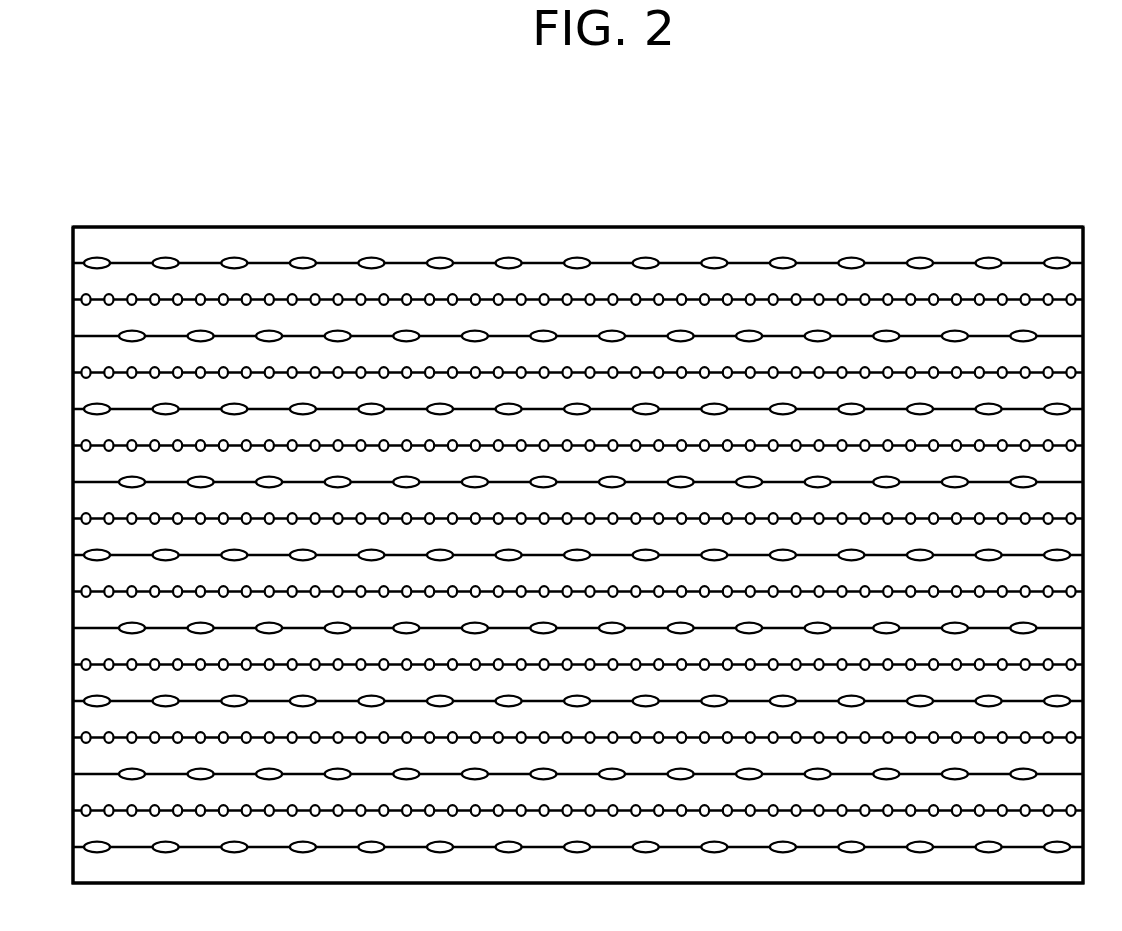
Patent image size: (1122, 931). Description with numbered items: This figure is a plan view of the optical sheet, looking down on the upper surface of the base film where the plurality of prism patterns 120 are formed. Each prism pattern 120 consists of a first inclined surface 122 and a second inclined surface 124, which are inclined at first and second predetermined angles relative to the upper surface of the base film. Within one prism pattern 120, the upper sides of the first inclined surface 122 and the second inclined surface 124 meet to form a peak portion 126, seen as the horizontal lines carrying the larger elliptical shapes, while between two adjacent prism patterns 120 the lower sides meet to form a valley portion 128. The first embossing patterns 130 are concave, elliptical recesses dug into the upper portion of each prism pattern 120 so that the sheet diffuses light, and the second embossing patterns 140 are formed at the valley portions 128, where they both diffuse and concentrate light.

The prism patterns 120 is at (457, 153).
The first inclined surface 122 is at (578, 243).
The second inclined surface 124 is at (475, 280).
The peak portion 126 is at (958, 262).
The valley portion 128 is at (1033, 298).
The first embossing patterns 130 is at (712, 254).
The second embossing patterns 140 is at (813, 292).